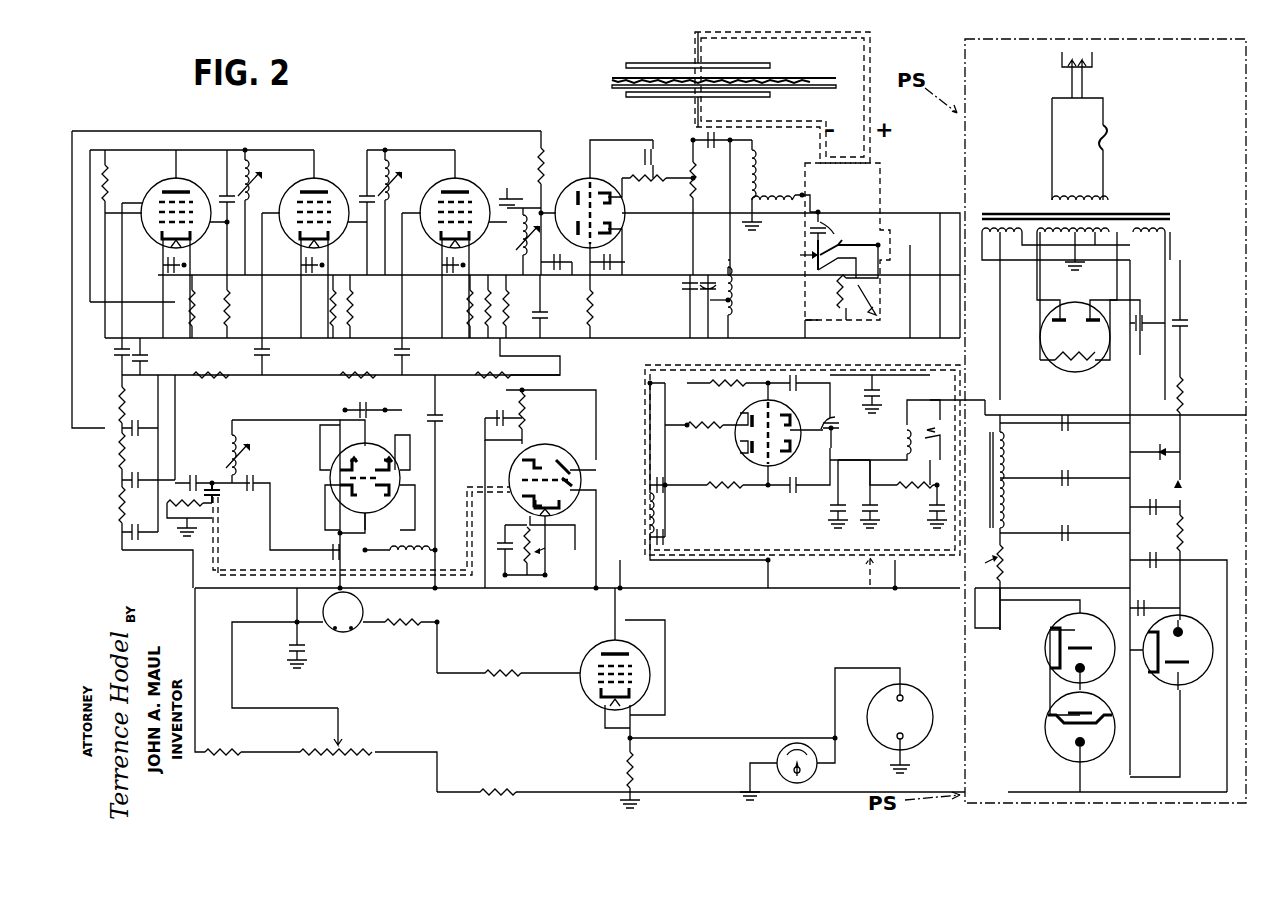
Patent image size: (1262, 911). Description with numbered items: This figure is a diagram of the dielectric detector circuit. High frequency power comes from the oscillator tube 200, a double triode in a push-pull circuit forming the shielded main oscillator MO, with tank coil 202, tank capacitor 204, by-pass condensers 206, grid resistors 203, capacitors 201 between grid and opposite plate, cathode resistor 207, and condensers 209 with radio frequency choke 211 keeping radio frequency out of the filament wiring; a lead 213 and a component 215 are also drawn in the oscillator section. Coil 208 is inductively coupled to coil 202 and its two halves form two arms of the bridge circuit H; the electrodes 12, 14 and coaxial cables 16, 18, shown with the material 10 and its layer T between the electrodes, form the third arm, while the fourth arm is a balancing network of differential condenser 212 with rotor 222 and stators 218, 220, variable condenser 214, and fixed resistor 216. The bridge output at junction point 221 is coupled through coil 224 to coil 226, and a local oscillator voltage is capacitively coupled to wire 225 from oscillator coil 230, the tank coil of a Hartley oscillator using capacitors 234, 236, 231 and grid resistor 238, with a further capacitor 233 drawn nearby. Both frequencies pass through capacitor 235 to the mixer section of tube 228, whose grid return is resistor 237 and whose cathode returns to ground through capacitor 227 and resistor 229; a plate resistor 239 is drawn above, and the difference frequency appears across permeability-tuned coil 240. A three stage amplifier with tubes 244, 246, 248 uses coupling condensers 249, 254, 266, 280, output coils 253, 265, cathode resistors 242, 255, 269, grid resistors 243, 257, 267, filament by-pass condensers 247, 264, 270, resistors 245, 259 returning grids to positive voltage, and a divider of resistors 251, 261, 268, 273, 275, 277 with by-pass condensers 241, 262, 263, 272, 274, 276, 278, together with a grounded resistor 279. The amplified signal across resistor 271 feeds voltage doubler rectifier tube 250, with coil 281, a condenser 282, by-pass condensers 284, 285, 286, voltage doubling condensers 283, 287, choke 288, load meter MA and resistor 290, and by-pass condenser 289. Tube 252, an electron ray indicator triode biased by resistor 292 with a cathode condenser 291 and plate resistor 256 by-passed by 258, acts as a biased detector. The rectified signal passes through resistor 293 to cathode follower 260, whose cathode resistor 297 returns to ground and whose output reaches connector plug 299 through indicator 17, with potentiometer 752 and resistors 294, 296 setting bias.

The recording medium sheet 10 is at (585, 72).
The electrode 12 is at (668, 48).
The electrode 14 is at (616, 92).
The coaxial cable 16 is at (876, 52).
The indicator 17 is at (780, 752).
The coaxial cable 18 is at (690, 100).
The oscillator tube 200 is at (740, 450).
The capacitors 201 is at (798, 378).
The tank coil 202 is at (950, 400).
The grid resistors 203 is at (745, 393).
The tank capacitor 204 is at (825, 440).
The condensers 206 is at (905, 352).
The cathode resistor 207 is at (700, 420).
The coil 208 is at (910, 440).
The condensers 209 is at (668, 500).
The radio frequency choke 211 is at (648, 540).
The differential condenser 212 is at (795, 300).
The output lead 213 is at (905, 560).
The variable condenser 214 is at (840, 220).
The resistor 215 is at (915, 490).
The fixed resistor 216 is at (858, 298).
The stator 218 is at (800, 312).
The stator 220 is at (845, 240).
The junction point 221 is at (820, 210).
The rotor 222 is at (800, 255).
The coil 224 is at (775, 195).
The wire 225 is at (732, 285).
The coil 226 is at (768, 143).
The capacitor 227 is at (640, 170).
The mixer tube 228 is at (577, 184).
The resistor 229 is at (651, 150).
The oscillator coil 230 is at (732, 305).
The capacitor 231 is at (612, 270).
The capacitor 233 is at (555, 275).
The capacitor 234 is at (712, 250).
The capacitor 235 is at (718, 138).
The capacitor 236 is at (712, 270).
The resistor 237 is at (696, 172).
The grid resistor 238 is at (594, 312).
The resistor 239 is at (541, 140).
The coil 240 is at (518, 185).
The by-pass condenser 241 is at (542, 330).
The cathode resistor 242 is at (468, 300).
The grid resistor 243 is at (485, 310).
The amplifier tube 244 is at (460, 182).
The resistor 245 is at (503, 322).
The amplifier tube 246 is at (320, 182).
The condenser 247 is at (440, 265).
The amplifier tube 248 is at (208, 232).
The coupling condenser 249 is at (523, 215).
The rectifier tube 250 is at (400, 478).
The resistor 251 is at (508, 373).
The tube 252 is at (580, 432).
The output coil 253 is at (398, 185).
The coupling condenser 254 is at (367, 170).
The cathode resistor 255 is at (330, 300).
The triode plate resistor 256 is at (528, 420).
The grid resistor 257 is at (347, 310).
The by-pass condenser 258 is at (500, 410).
The resistor 259 is at (352, 320).
The cathode follower 260 is at (585, 655).
The resistor 261 is at (355, 372).
The by-pass condenser 262 is at (404, 360).
The by-pass condenser 263 is at (264, 358).
The condenser 264 is at (300, 265).
The output coil 265 is at (258, 183).
The coupling condenser 266 is at (227, 170).
The grid resistor 267 is at (222, 310).
The resistor 268 is at (216, 378).
The cathode resistor 269 is at (188, 300).
The condenser 270 is at (160, 265).
The resistor 271 is at (110, 178).
The by-pass condenser 272 is at (128, 357).
The resistor 273 is at (126, 405).
The by-pass condenser 274 is at (130, 428).
The resistor 275 is at (120, 453).
The by-pass condenser 276 is at (130, 482).
The resistor 277 is at (120, 505).
The by-pass condenser 278 is at (140, 548).
The resistor 279 is at (180, 505).
The coupling capacitor 280 is at (196, 478).
The coil 281 is at (248, 450).
The capacitor 282 is at (216, 497).
The condenser 283 is at (270, 520).
The condenser 284 is at (258, 490).
The condenser 285 is at (400, 408).
The condenser 286 is at (440, 425).
The condenser 287 is at (340, 555).
The choke 288 is at (400, 555).
The condenser 289 is at (290, 650).
The resistor 290 is at (400, 628).
The capacitor 291 is at (502, 553).
The resistor 292 is at (530, 560).
The resistor 293 is at (500, 680).
The resistor 294 is at (225, 758).
The resistor 296 is at (510, 790).
The cathode resistor 297 is at (635, 770).
The connector plug 299 is at (915, 690).
The potentiometer 752 is at (350, 748).
The meter MA is at (362, 610).
The main oscillator MO is at (802, 495).
The bridge circuit H is at (885, 185).
The test specimen T is at (623, 78).